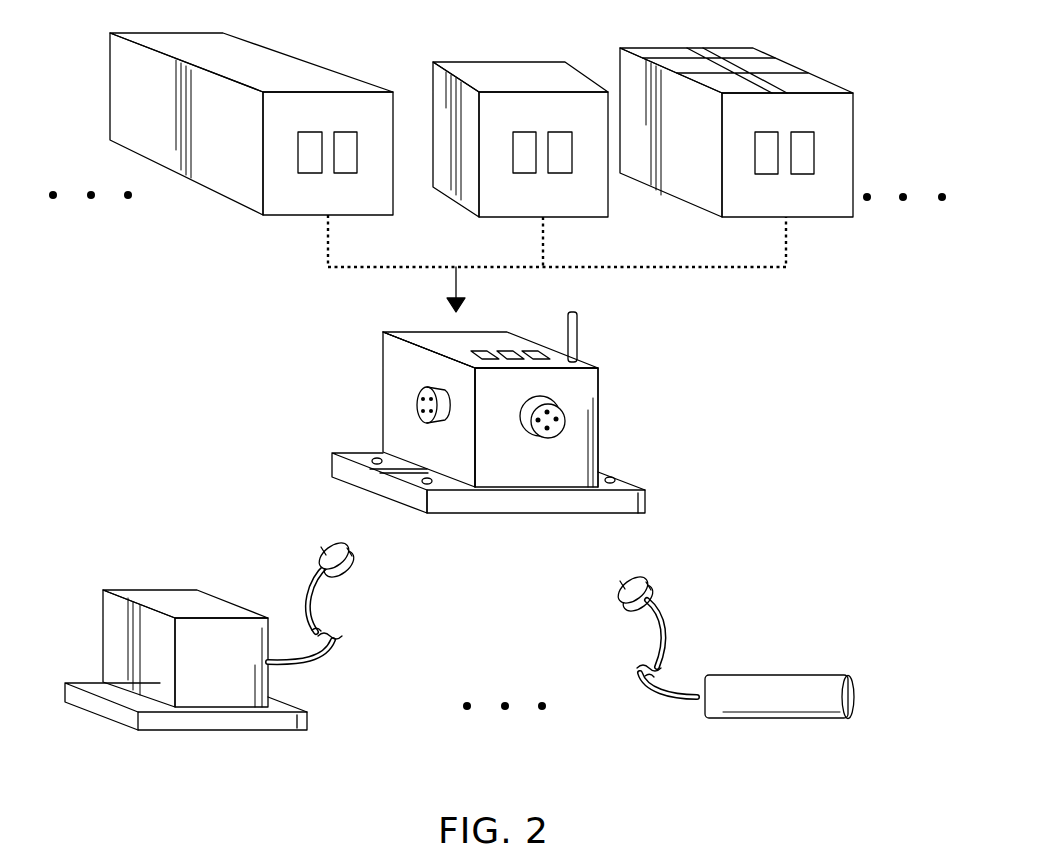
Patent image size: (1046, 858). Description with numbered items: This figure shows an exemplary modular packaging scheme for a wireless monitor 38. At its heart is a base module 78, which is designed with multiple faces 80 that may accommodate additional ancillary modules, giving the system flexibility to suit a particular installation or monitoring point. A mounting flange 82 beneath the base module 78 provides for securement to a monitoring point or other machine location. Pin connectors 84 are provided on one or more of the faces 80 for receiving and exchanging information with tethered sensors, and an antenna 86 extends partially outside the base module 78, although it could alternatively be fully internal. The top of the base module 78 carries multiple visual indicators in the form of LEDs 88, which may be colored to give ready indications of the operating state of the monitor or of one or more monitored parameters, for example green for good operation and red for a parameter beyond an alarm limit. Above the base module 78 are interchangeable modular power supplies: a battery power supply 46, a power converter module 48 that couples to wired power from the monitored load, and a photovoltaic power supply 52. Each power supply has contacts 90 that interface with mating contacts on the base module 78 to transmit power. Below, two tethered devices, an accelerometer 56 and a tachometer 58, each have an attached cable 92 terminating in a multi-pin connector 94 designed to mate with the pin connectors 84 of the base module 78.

The wireless monitor 38 is at (509, 413).
The battery power supply 46 is at (270, 58).
The power converter module 48 is at (477, 68).
The photovoltaic power supply 52 is at (800, 67).
The accelerometer 56 is at (205, 598).
The tachometer 58 is at (783, 675).
The base module 78 is at (390, 443).
The faces 80 is at (390, 357).
The mounting flange 82 is at (340, 472).
The pin connectors 84 is at (415, 403).
The antenna 86 is at (577, 332).
The LEDs 88 is at (527, 353).
The contacts 90 is at (308, 173).
The cable 92 is at (317, 612).
The multi-pin connector 94 is at (347, 550).